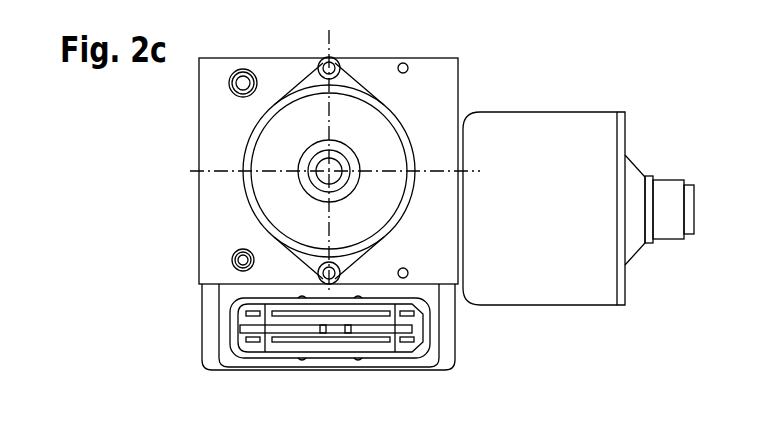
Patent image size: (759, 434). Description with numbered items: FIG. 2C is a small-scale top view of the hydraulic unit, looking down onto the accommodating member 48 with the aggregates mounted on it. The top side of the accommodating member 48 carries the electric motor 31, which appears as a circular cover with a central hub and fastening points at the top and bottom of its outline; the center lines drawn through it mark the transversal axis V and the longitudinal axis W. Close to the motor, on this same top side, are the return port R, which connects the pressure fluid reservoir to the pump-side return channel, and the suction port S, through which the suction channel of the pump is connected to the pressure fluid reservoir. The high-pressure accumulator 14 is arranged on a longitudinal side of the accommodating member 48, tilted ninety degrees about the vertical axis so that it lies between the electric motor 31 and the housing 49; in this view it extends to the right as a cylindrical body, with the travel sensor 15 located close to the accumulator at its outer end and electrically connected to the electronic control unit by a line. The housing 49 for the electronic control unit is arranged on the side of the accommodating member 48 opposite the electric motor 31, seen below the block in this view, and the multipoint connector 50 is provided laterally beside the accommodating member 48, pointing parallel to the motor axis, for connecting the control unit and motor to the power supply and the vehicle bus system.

The high-pressure accumulator 14 is at (583, 128).
The travel sensor 15 is at (668, 190).
The electric motor 31 is at (268, 192).
The accommodating member 48 is at (218, 128).
The housing 49 is at (210, 325).
The multipoint connector 50 is at (430, 328).
The return port R is at (241, 68).
The suction port S is at (232, 263).
The transversal axis V is at (334, 40).
The longitudinal axis W is at (433, 166).